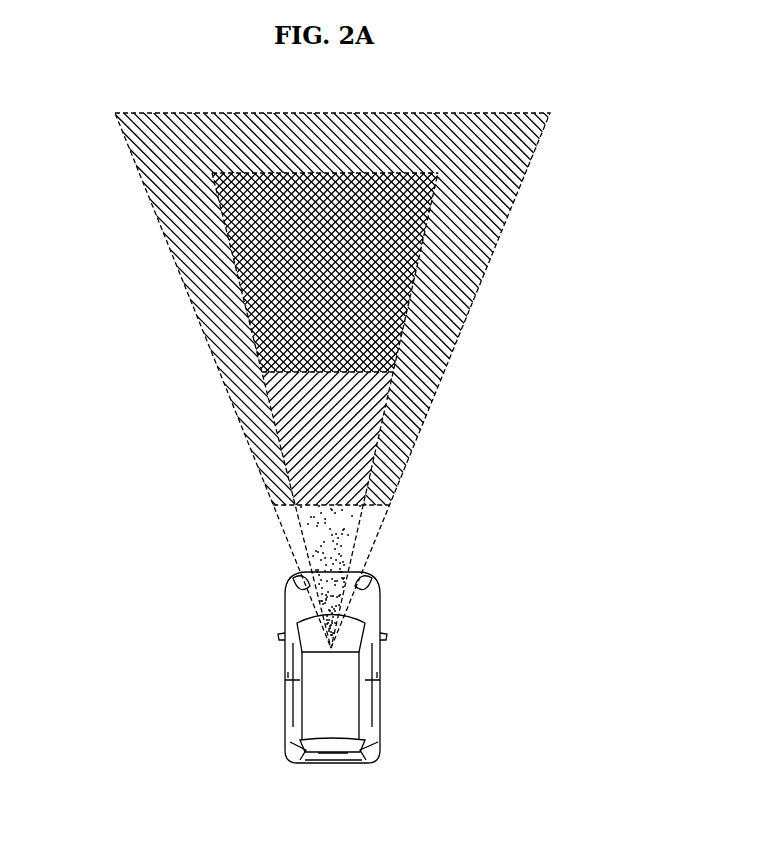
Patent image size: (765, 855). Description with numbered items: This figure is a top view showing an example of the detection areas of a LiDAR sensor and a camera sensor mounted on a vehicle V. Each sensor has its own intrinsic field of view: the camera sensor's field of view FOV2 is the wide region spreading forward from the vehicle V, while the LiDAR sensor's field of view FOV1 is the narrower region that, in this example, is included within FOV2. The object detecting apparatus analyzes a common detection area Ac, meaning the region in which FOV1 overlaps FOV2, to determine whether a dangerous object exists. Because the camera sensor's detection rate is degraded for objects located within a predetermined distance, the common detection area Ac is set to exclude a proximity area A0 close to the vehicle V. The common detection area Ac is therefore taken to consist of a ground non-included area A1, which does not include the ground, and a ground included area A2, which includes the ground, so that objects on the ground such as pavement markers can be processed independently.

The field of view of the camera sensor FOV2 is at (288, 535).
The field of view of the LiDAR sensor FOV1 is at (357, 530).
The common detection area Ac is at (382, 380).
The ground included area A2 is at (305, 273).
The ground non-included area A1 is at (300, 425).
The proximity area A0 is at (333, 590).
The vehicle V is at (338, 700).